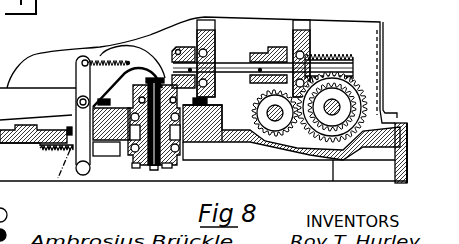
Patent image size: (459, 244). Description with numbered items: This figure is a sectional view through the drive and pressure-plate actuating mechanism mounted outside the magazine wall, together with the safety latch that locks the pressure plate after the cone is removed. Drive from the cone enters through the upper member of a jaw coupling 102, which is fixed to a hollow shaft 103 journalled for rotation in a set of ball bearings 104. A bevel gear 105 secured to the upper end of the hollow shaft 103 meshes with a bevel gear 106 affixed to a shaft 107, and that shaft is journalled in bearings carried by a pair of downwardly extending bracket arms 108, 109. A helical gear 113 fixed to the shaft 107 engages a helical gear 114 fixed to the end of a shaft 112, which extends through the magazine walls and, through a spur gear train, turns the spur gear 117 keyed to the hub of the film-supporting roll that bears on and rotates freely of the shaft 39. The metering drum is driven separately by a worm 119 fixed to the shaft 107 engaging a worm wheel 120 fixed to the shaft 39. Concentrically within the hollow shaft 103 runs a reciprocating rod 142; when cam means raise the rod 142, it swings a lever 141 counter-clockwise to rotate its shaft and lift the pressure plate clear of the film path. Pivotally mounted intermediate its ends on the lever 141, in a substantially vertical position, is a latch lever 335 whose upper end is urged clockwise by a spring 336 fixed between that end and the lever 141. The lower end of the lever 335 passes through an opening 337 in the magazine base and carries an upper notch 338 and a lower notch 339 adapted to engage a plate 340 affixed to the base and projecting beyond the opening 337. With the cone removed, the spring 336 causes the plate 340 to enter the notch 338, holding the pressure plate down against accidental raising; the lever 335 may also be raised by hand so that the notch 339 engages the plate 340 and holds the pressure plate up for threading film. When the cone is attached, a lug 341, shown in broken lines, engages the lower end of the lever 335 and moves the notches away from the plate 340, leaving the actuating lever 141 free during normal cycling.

The shaft 39 is at (338, 105).
The jaw coupling 102 is at (137, 167).
The hollow shaft 103 is at (185, 158).
The ball bearings 104 is at (130, 165).
The bevel gear 105 is at (118, 82).
The bevel gear 106 is at (173, 47).
The shaft 107 is at (238, 63).
The bracket arm 108 is at (201, 28).
The bracket arm 109 is at (303, 27).
The shaft 112 is at (268, 147).
The helical gear 113 is at (257, 85).
The helical gear 114 is at (255, 113).
The spur gear 117 is at (365, 97).
The worm 119 is at (330, 53).
The worm wheel 120 is at (343, 130).
The lever 141 is at (133, 58).
The rod 142 is at (160, 168).
The lever 335 is at (78, 78).
The spring 336 is at (103, 56).
The opening 337 is at (72, 118).
The notch 338 is at (106, 149).
The notch 339 is at (90, 167).
The plate 340 is at (42, 150).
The lug 341 is at (58, 186).